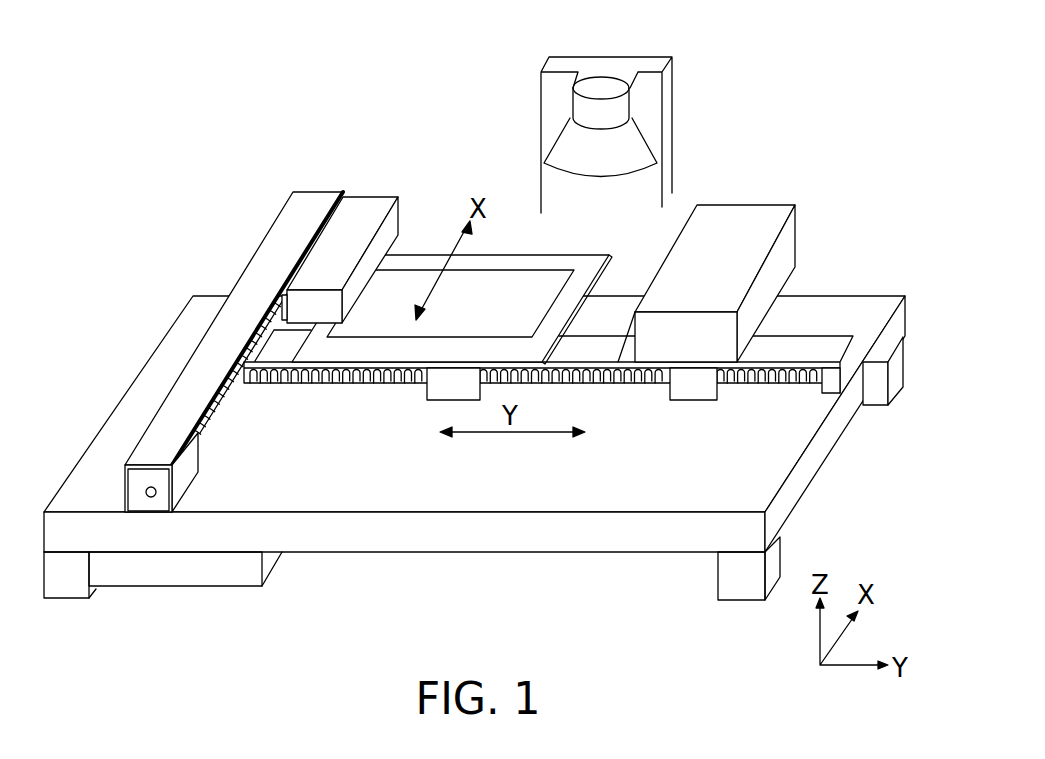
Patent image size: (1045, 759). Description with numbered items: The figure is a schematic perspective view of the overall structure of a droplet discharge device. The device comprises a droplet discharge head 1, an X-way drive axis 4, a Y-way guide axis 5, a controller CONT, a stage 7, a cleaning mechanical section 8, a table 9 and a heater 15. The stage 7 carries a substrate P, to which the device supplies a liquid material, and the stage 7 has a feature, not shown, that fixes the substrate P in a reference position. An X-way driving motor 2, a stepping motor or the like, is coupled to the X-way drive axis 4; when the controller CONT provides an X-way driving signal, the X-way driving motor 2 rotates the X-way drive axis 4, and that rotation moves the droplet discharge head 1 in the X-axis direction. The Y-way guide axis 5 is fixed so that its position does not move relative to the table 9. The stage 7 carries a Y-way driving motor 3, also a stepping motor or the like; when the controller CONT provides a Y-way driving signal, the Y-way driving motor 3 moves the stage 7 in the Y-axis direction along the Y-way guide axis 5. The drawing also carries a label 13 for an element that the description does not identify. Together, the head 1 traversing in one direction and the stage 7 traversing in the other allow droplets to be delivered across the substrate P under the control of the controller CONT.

The droplet discharge head 1 is at (261, 301).
The X-way driving motor 2 is at (125, 490).
The Y-way driving motor 3 is at (548, 390).
The X-way drive axis 4 is at (217, 413).
The Y-way guide axis 5 is at (767, 388).
The stage 7 is at (452, 276).
The cleaning mechanical section 8 is at (747, 205).
The table 9 is at (852, 296).
The imaging unit 13 is at (636, 106).
The heater 15 is at (583, 108).
The substrate P is at (518, 268).
The controller CONT is at (276, 566).